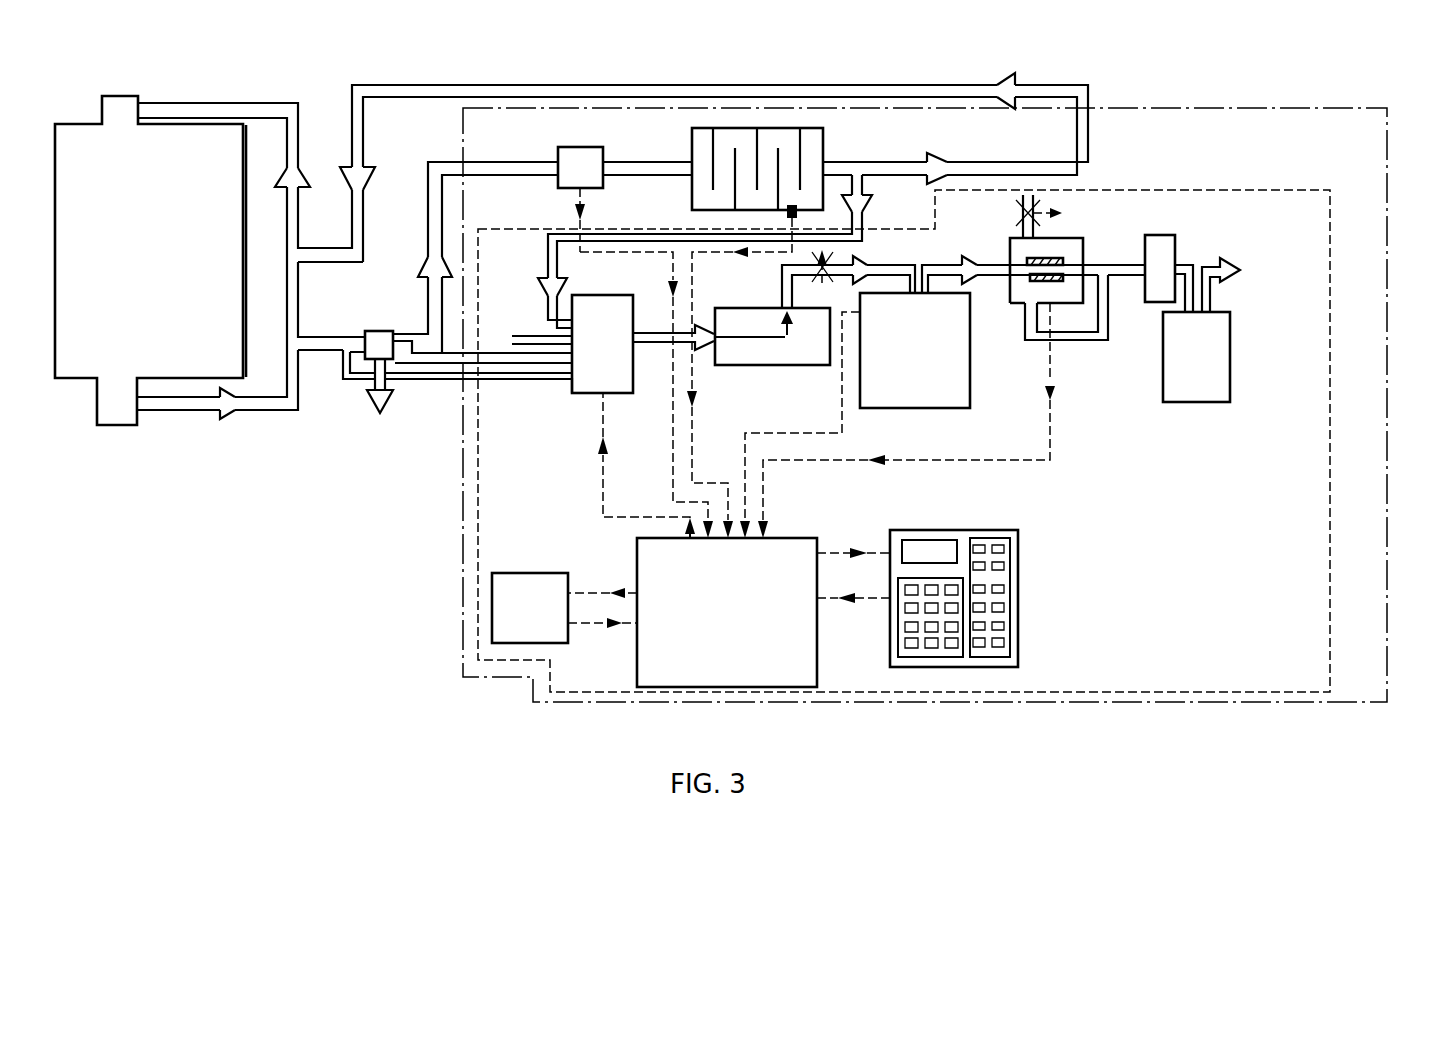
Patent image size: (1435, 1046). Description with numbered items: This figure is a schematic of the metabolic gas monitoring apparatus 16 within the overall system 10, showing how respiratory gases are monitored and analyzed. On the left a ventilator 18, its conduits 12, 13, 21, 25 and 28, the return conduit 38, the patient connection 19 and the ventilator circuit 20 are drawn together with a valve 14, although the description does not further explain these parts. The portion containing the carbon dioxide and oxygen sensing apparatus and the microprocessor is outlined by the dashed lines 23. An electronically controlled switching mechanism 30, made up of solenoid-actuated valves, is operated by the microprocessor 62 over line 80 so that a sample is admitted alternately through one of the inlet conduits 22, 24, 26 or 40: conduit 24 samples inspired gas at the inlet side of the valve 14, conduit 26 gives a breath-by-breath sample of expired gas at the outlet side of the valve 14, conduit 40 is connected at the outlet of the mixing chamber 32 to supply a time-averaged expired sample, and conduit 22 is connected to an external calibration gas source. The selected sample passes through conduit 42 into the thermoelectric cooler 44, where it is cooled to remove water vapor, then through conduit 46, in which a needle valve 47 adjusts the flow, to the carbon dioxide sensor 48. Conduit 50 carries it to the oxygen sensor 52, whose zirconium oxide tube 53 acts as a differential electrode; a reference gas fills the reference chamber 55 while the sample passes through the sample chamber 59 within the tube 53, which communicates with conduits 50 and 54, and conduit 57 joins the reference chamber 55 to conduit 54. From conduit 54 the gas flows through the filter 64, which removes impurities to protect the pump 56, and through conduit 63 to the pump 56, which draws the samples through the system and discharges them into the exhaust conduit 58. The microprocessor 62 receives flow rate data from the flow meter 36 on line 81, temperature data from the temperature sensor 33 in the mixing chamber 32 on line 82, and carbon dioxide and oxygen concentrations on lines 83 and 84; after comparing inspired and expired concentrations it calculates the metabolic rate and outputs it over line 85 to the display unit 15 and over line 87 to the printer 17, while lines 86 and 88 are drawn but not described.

The respiratory gas monitoring system 10 is at (913, 66).
The ventilator outlet conduit 12 is at (261, 416).
The conduit to valve 13 is at (314, 334).
The valve 14 is at (380, 330).
The display unit 15 is at (926, 550).
The metabolic gas monitoring apparatus 16 is at (1388, 492).
The printer 17 is at (539, 617).
The ventilator 18 is at (159, 262).
The patient conduit 19 is at (367, 392).
The ventilator circuit 20 is at (165, 93).
The return conduit branch 21 is at (303, 297).
The inlet conduit 22 is at (535, 336).
The sensing apparatus and microprocessor portion 23 is at (1331, 414).
The inlet conduit 24 is at (521, 382).
The ventilator exhalation conduit 25 is at (229, 102).
The inlet conduit 26 is at (562, 374).
The conduit 28 is at (489, 162).
The switching mechanism 30 is at (600, 295).
The mixing chamber 32 is at (790, 128).
The temperature sensor 33 is at (798, 213).
The flow meter 36 is at (590, 177).
The return conduit 38 is at (433, 84).
The inlet conduit 40 is at (866, 223).
The gas conduit 42 is at (640, 343).
The thermoelectric cooler 44 is at (759, 365).
The conduit 46 is at (880, 264).
The needle valve 47 is at (826, 262).
The carbon dioxide sensor 48 is at (924, 381).
The conduit 50 is at (932, 264).
The oxygen sensor 52 is at (1053, 238).
The zirconium oxide tube 53 is at (1066, 262).
The conduit 54 is at (1116, 264).
The reference chamber 55 is at (1055, 259).
The pump 56 is at (1232, 372).
The conduit 57 is at (1095, 341).
The exhaust conduit 58 is at (1211, 266).
The sample chamber 59 is at (1022, 270).
The microprocessor 62 is at (736, 644).
The conduit 63 is at (1188, 265).
The filter 64 is at (1162, 236).
The line 80 is at (603, 473).
The line 81 is at (675, 446).
The line 82 is at (692, 473).
The line 83 is at (745, 456).
The line 84 is at (916, 458).
The line 85 is at (834, 553).
The keyboard input line 86 is at (875, 600).
The line 87 is at (590, 593).
The output device input line 88 is at (625, 626).